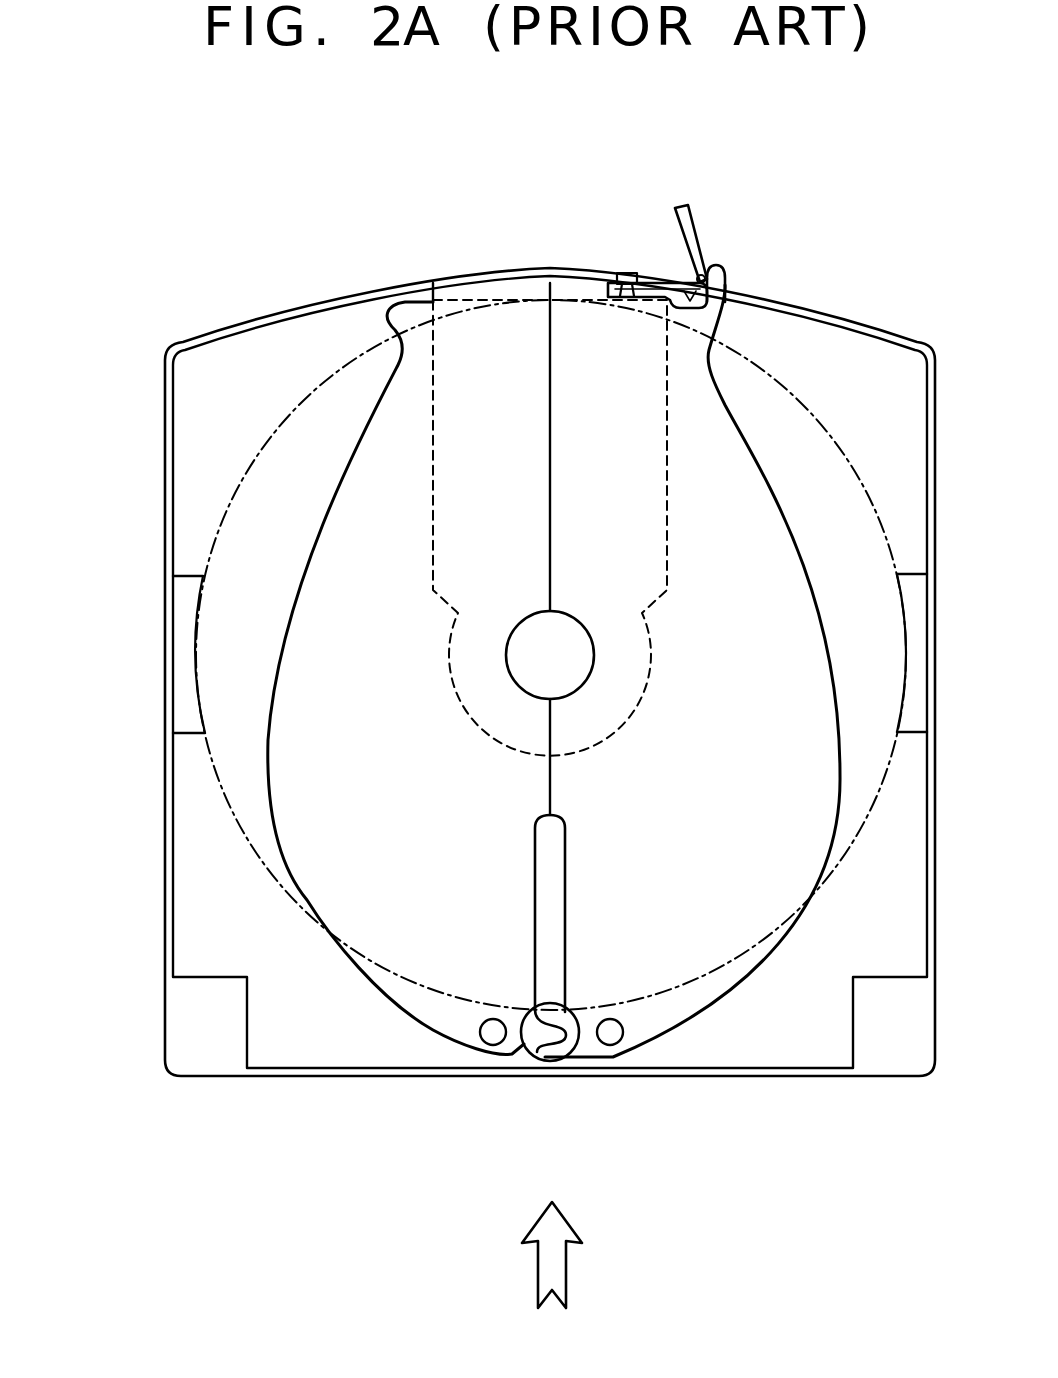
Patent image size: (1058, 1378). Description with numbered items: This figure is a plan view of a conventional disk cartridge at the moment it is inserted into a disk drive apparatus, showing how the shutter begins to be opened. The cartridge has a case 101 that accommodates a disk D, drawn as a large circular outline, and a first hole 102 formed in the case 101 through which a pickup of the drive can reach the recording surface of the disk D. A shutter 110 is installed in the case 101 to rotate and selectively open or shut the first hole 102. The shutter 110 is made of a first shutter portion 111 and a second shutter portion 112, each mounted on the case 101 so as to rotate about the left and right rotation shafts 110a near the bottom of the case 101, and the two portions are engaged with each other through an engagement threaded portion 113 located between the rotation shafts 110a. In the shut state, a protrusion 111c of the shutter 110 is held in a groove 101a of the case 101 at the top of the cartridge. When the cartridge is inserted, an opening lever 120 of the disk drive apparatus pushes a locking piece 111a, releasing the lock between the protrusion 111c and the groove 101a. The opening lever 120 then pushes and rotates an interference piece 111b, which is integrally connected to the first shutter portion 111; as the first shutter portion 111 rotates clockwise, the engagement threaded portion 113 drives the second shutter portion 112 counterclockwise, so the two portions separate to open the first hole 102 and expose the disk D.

The case 101 is at (167, 744).
The groove 101a is at (628, 271).
The first hole 102 is at (440, 525).
The disk D is at (270, 487).
The shutter 110 is at (382, 1158).
The rotation shafts 110a is at (493, 1040).
The first shutter portion 111 is at (577, 947).
The locking piece 111a is at (716, 266).
The interference piece 111b is at (725, 278).
The protrusion 111c is at (607, 278).
The second shutter portion 112 is at (378, 970).
The engagement threaded portion 113 is at (550, 1060).
The opening lever 120 is at (685, 206).